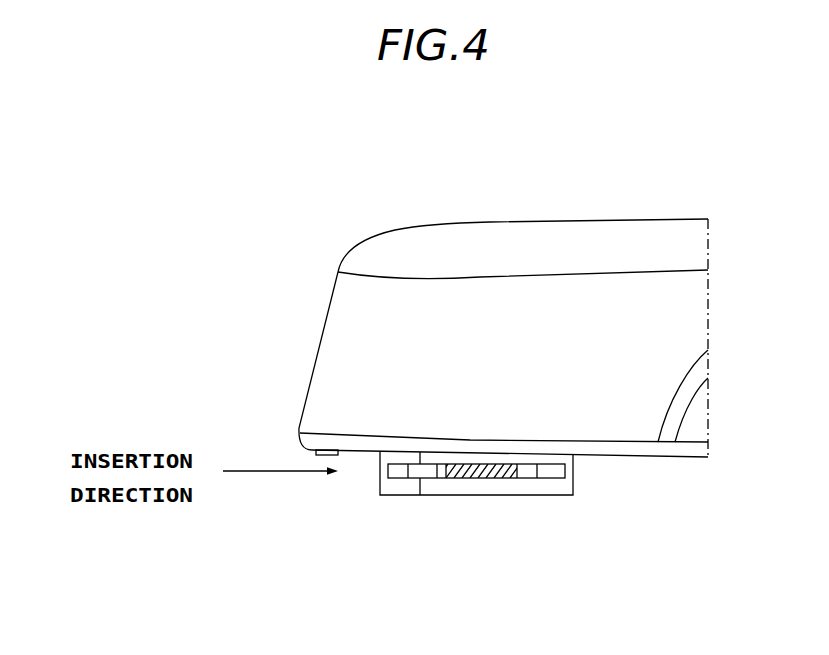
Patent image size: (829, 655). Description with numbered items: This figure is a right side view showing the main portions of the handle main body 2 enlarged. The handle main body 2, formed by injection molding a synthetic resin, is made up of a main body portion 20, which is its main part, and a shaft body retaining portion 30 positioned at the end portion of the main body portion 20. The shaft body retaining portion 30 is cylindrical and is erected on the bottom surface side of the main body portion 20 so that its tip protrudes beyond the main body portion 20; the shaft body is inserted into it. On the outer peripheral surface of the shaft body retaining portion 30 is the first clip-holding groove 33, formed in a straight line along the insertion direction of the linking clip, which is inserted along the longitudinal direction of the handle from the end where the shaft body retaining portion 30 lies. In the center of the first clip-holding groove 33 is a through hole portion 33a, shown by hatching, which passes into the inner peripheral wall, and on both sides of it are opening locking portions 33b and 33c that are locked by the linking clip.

The handle main body 2 is at (503, 271).
The main body portion 20 is at (478, 223).
The shaft body retaining portion 30 is at (380, 484).
The first clip-holding groove 33 is at (473, 491).
The through hole portion 33a is at (488, 466).
The opening locking portion 33b is at (518, 479).
The opening locking portion 33c is at (437, 471).